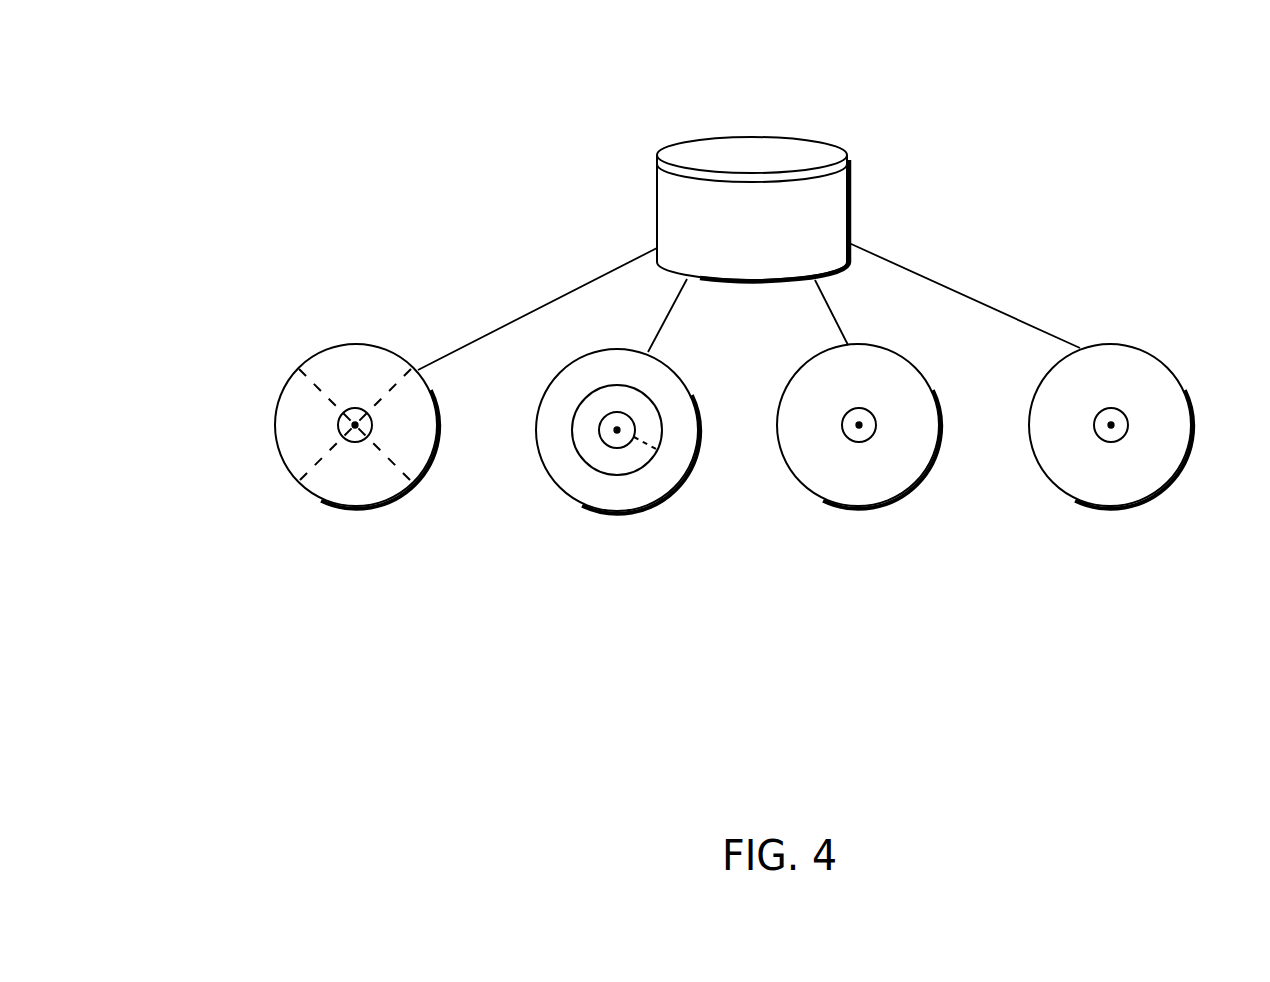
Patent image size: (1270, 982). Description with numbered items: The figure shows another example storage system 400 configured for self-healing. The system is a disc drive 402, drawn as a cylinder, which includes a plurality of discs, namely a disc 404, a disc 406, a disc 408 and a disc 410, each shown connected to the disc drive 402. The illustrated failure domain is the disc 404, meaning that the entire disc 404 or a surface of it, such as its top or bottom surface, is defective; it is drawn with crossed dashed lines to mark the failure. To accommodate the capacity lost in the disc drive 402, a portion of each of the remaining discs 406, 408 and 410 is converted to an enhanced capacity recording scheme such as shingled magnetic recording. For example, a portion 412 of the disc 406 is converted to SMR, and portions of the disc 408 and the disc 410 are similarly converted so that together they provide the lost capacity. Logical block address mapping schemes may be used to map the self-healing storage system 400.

The storage system 400 is at (291, 109).
The disc drive 402 is at (753, 209).
The disc 404 is at (372, 344).
The disc 406 is at (620, 349).
The disc 408 is at (875, 344).
The disc 410 is at (1127, 344).
The portion 412 is at (650, 447).